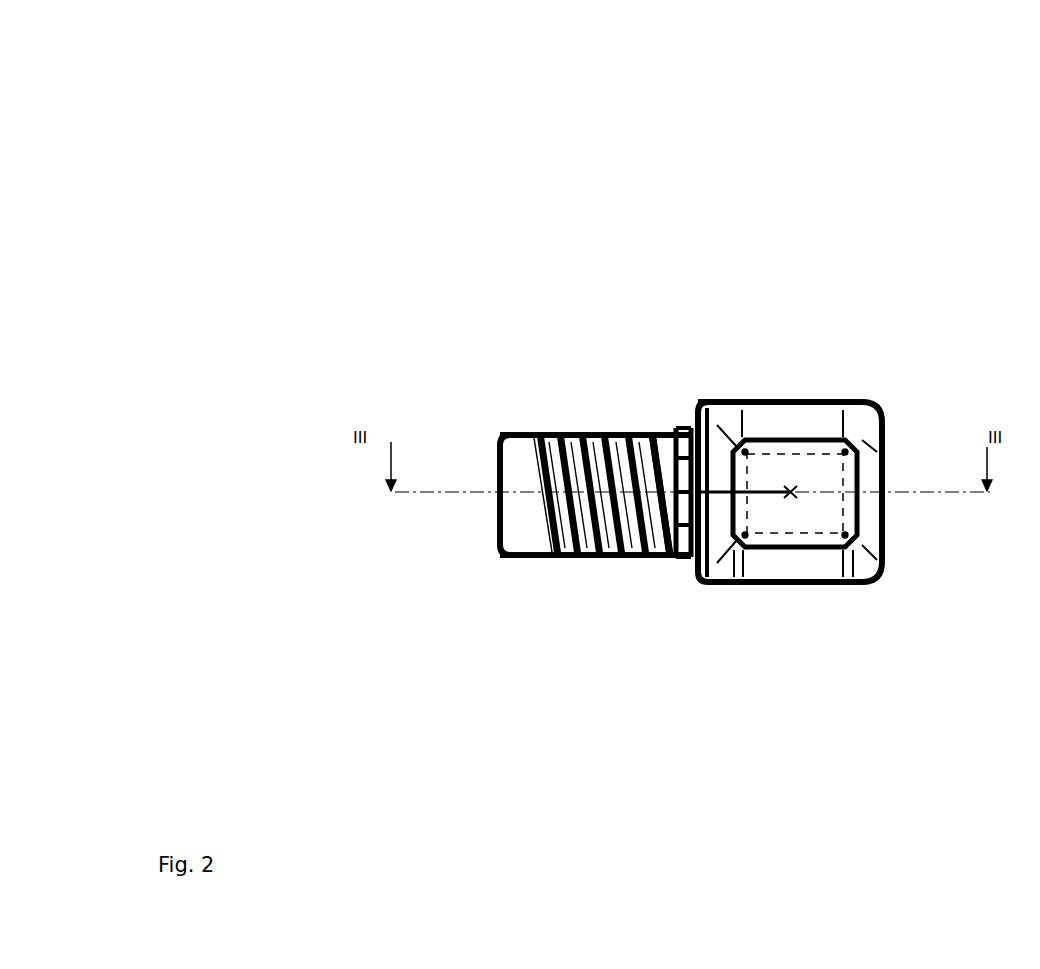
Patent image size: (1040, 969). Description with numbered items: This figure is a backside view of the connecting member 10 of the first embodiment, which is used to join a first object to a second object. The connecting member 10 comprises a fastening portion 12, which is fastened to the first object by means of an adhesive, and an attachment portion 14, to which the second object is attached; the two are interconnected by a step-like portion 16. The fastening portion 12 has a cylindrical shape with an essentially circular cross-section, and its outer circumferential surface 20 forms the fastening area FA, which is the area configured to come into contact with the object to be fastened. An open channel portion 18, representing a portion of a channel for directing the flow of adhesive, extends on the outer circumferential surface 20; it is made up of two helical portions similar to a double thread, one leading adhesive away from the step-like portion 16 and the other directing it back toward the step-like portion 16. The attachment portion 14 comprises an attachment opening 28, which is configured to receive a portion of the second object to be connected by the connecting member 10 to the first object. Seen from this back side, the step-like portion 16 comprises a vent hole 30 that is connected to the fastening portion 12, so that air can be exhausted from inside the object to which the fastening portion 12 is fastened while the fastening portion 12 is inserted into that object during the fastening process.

The connecting member 10 is at (884, 165).
The fastening portion 12 is at (631, 372).
The attachment portion 14 is at (898, 404).
The step-like portion 16 is at (683, 424).
The open channel portion 18 is at (586, 570).
The outer circumferential surface 20 is at (515, 560).
The attachment opening 28 is at (862, 470).
The vent hole 30 is at (661, 560).
The fastening area FA is at (617, 560).